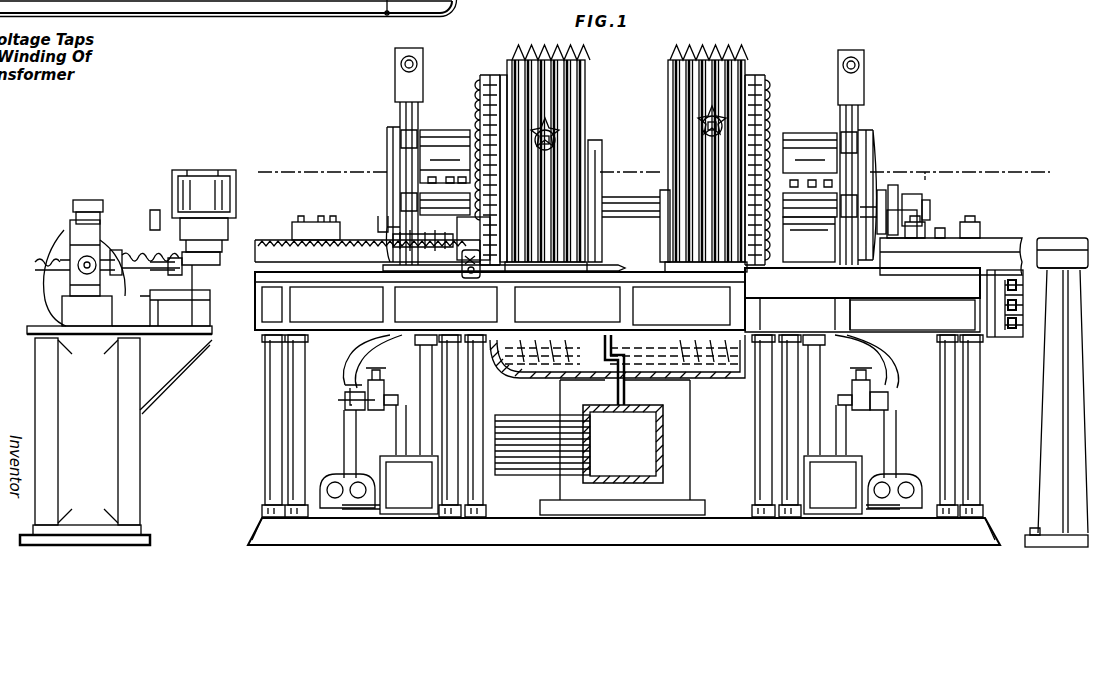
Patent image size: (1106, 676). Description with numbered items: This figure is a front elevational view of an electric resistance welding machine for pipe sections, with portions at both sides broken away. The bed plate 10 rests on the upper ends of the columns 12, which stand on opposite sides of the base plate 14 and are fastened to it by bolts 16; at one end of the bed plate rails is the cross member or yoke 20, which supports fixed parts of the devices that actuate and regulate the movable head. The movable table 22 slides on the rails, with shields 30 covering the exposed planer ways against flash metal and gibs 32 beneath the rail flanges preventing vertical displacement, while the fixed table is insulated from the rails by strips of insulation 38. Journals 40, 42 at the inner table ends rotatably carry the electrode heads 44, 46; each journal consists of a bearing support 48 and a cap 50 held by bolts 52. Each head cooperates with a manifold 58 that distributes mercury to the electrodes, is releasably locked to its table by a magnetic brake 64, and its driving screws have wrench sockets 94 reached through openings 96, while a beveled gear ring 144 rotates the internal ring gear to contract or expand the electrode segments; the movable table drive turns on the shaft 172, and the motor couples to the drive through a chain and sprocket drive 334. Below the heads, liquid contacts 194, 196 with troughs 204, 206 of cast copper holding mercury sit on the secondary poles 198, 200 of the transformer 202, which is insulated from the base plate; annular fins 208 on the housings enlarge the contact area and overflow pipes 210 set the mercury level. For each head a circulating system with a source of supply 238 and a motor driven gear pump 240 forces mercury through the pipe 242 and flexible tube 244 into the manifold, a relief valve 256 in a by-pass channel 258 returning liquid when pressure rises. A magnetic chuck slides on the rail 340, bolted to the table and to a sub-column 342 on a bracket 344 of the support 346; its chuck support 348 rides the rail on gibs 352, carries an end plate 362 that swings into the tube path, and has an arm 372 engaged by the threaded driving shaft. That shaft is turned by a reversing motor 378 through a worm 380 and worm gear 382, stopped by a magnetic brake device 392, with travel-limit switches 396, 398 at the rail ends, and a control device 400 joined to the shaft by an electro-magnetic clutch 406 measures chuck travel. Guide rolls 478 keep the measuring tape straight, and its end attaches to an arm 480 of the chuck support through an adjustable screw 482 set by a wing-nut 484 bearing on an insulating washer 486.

The bed plate 10 is at (832, 338).
The columns 12 is at (268, 378).
The base plate 14 is at (262, 525).
The bolts 16 is at (265, 498).
The cross member or yoke 20 is at (1008, 338).
The movable table 22 is at (900, 285).
The shields 30 is at (612, 298).
The gibs 32 is at (850, 286).
The strips of insulation 38 is at (303, 280).
The journal 40 is at (454, 132).
The journal 42 is at (795, 262).
The electrode head 44 is at (522, 56).
The electrode head 46 is at (748, 78).
The bearing support 48 is at (790, 280).
The cap 50 is at (800, 145).
The bolts 52 is at (830, 185).
The manifold 58 is at (386, 142).
The magnetic brake 64 is at (398, 92).
The wrench sockets 94 is at (556, 138).
The opening 96 is at (556, 128).
The beveled gear ring 144 is at (475, 86).
The shaft 172 is at (635, 195).
The liquid contact 194 is at (510, 372).
The liquid contact 196 is at (658, 316).
The secondary pole 198 is at (616, 380).
The secondary pole 200 is at (648, 380).
The transformer 202 is at (681, 458).
The trough 204 is at (556, 372).
The trough 206 is at (702, 372).
The annular fins 208 is at (690, 48).
The overflow pipes 210 is at (420, 375).
The source of supply 238 is at (404, 512).
The motor driven gear pump 240 is at (336, 512).
The pipe 242 is at (344, 443).
The flexible tube 244 is at (350, 345).
The relief valve 256 is at (378, 398).
The by-pass channel 258 is at (396, 437).
The chain and sprocket drive 334 is at (598, 165).
The rail 340 is at (305, 222).
The sub-column 342 is at (190, 314).
The bracket 344 is at (158, 380).
The support 346 is at (132, 428).
The chuck support 348 is at (170, 178).
The gibs 352 is at (147, 240).
The end plate 362 is at (170, 190).
The arm 372 is at (210, 200).
The reversing motor 378 is at (55, 290).
The worm 380 is at (62, 275).
The worm gear 382 is at (74, 212).
The magnetic brake device 392 is at (62, 232).
The travel-limit switch 396 is at (158, 210).
The travel-limit switch 398 is at (380, 212).
The control device 400 is at (455, 248).
The electro-magnetic clutch 406 is at (448, 230).
The guide rolls 478 is at (462, 286).
The arm 480 is at (212, 268).
The adjustable screw 482 is at (150, 270).
The wing-nut 484 is at (178, 276).
The insulating washer 486 is at (194, 285).